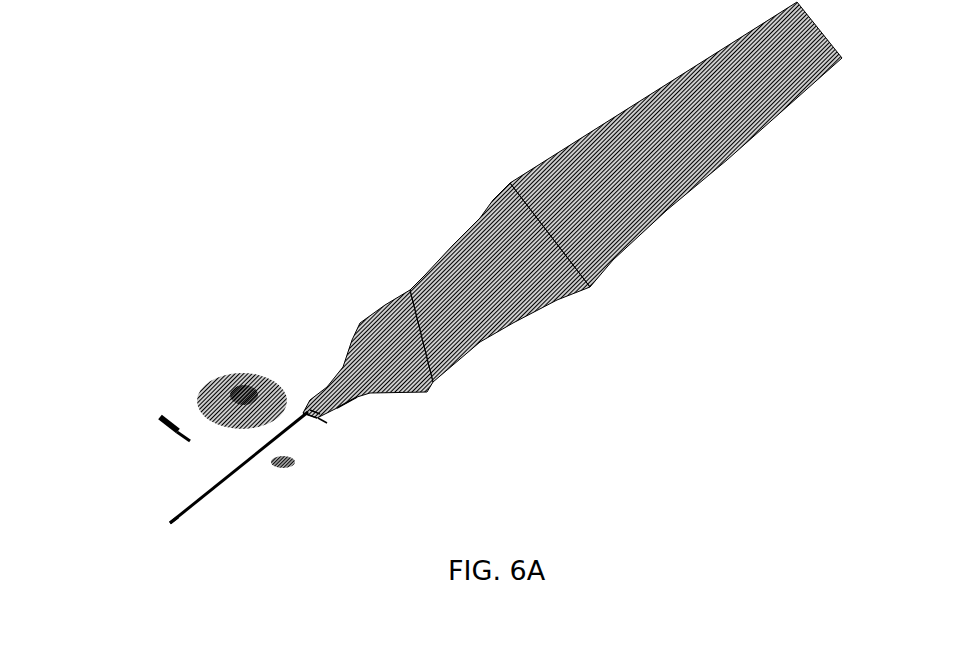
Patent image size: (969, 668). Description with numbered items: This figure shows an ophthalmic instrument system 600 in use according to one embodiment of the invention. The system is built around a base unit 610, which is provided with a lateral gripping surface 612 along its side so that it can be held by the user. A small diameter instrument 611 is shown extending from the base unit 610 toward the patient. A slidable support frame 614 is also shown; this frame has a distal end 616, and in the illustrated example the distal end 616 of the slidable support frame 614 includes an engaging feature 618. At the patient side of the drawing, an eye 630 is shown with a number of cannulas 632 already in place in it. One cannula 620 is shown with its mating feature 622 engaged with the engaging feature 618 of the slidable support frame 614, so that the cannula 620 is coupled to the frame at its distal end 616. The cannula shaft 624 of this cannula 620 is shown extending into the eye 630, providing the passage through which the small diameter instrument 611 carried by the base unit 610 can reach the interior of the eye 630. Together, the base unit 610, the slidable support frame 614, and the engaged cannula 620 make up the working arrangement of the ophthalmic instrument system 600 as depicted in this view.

The ophthalmic instrument system 600 is at (597, 437).
The base unit 610 is at (685, 195).
The small diameter instrument 611 is at (227, 483).
The lateral gripping surface 612 is at (515, 322).
The slidable support frame 614 is at (360, 323).
The distal end 616 is at (347, 403).
The engaging feature 618 is at (310, 400).
The cannula 620 is at (303, 413).
The mating feature 622 is at (320, 413).
The cannula shaft 624 is at (327, 423).
The eye 630 is at (192, 523).
The cannulas 632 is at (157, 423).